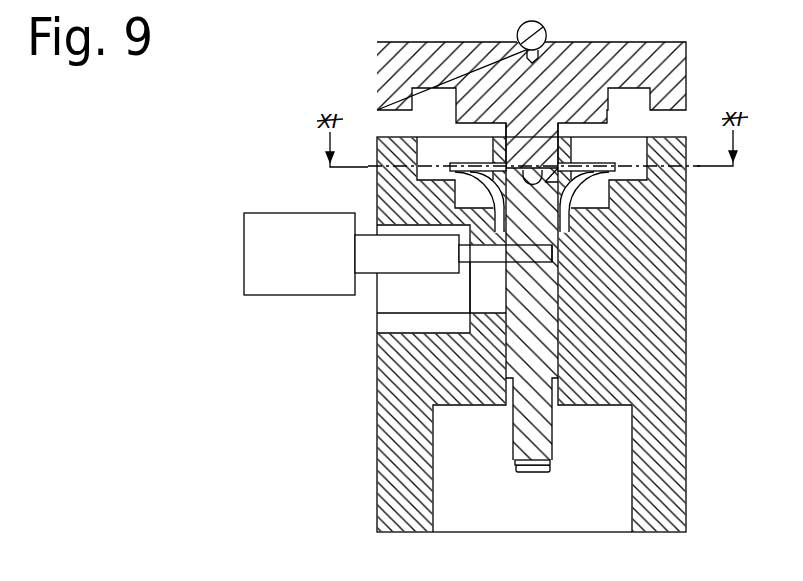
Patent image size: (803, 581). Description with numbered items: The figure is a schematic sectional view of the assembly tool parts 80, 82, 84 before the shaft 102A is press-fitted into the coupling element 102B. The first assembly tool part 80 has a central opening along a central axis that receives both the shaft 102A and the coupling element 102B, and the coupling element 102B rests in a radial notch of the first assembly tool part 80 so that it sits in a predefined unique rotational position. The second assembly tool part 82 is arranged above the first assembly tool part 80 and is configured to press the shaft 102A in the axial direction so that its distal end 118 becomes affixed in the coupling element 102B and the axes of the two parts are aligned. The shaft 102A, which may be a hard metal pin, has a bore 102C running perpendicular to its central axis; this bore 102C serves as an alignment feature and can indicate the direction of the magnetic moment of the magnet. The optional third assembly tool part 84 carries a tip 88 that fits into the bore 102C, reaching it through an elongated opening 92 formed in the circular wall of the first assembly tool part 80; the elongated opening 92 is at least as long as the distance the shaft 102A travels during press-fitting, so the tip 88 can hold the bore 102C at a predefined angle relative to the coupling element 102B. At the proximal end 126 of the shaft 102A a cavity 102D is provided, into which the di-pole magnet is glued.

The first assembly tool part 80 is at (377, 421).
The second assembly tool part 82 is at (377, 93).
The third assembly tool part 84 is at (282, 242).
The tip 88 is at (497, 262).
The elongated opening 92 is at (417, 297).
The shaft 102A is at (537, 345).
The coupling element 102B is at (605, 174).
The bore 102C is at (560, 248).
The cavity 102D is at (538, 473).
The distal end 118 is at (548, 183).
The proximal end 126 is at (548, 463).